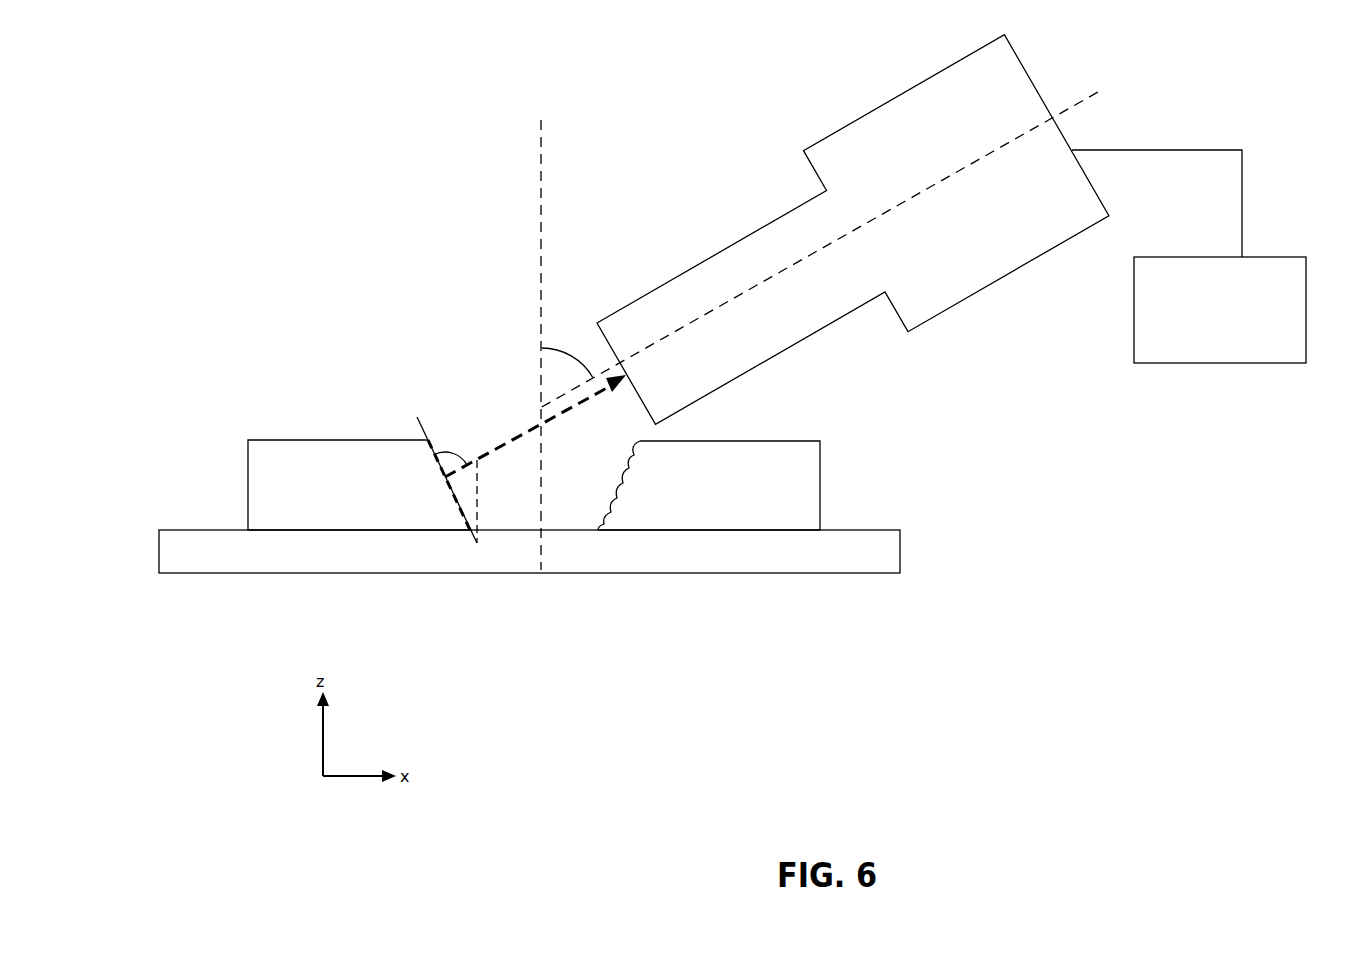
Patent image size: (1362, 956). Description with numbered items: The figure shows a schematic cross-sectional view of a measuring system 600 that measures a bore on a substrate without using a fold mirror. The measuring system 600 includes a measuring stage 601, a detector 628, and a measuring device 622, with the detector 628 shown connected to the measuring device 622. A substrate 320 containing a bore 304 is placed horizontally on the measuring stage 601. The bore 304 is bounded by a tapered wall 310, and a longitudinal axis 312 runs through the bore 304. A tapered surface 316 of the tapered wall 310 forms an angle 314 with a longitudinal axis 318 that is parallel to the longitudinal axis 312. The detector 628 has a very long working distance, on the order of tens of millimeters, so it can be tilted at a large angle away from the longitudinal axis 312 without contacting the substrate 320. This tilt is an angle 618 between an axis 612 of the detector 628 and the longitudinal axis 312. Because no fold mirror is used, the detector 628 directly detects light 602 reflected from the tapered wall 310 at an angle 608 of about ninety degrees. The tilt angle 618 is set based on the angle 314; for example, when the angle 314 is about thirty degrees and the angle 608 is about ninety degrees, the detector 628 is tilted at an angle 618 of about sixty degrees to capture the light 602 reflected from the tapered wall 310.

The measuring system 600 is at (350, 156).
The measuring stage 601 is at (882, 547).
The tapered wall 310 is at (462, 497).
The tapered surface 316 is at (417, 430).
The angle 314 is at (477, 514).
The longitudinal axis 318 is at (478, 500).
The angle 608 is at (447, 452).
The bore 304 is at (577, 503).
The longitudinal axis 312 is at (541, 182).
The angle 618 is at (545, 348).
The axis 612 is at (1084, 100).
The detector 628 is at (880, 108).
The measuring device 622 is at (1277, 257).
The substrate 320 is at (810, 490).
The light 602 is at (573, 407).